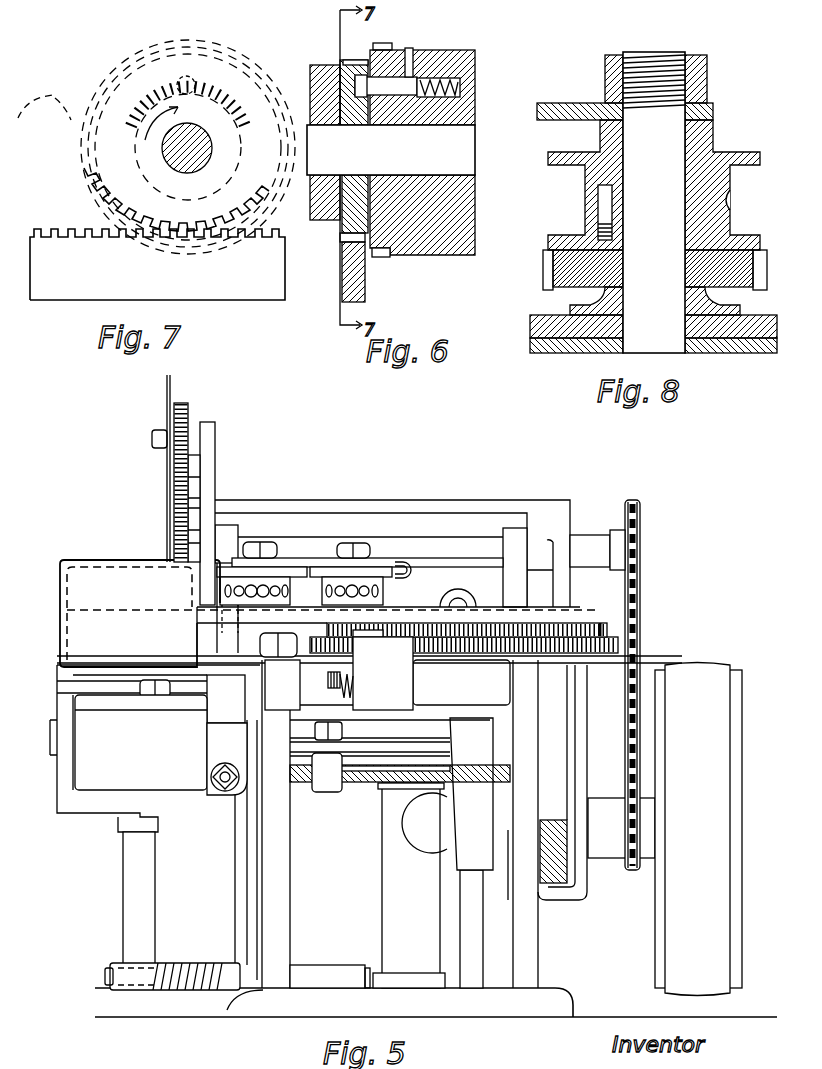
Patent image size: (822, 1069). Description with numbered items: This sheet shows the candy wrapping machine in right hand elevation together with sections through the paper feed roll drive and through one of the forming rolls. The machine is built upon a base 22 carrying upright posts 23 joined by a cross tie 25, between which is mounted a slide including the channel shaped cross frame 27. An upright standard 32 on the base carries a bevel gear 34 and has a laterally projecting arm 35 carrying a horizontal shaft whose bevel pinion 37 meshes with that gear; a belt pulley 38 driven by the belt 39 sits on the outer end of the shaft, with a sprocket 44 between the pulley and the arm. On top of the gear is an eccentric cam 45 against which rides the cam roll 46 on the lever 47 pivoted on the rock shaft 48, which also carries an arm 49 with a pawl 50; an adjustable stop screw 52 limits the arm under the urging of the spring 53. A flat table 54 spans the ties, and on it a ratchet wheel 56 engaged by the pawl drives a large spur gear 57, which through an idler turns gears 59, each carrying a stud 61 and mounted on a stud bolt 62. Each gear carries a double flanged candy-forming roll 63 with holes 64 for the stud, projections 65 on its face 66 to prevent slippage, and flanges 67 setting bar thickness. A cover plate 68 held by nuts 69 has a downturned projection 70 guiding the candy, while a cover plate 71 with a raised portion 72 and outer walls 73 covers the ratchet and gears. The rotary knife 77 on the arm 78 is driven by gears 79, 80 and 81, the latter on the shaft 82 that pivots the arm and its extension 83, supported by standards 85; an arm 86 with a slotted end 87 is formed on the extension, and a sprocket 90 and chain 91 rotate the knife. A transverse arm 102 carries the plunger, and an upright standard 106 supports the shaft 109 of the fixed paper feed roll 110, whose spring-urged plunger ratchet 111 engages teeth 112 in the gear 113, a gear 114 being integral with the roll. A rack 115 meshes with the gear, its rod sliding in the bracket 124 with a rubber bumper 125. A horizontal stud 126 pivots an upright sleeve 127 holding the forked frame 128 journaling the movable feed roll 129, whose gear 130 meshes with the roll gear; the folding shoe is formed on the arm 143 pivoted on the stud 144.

In FIG. 5, the base 22 is at (436, 1002).
In FIG. 5, the upright posts 23 is at (386, 824).
In FIG. 5, the cross tie 25 is at (485, 674).
In FIG. 5, the channel shaped cross frame 27 is at (319, 724).
In FIG. 5, the upright standard 32 is at (409, 885).
In FIG. 5, the bevel gear 34 is at (378, 782).
In FIG. 5, the laterally projecting arm 35 is at (427, 823).
In FIG. 5, the bevel pinion 37 is at (555, 895).
In FIG. 5, the belt pulley 38 is at (697, 829).
In FIG. 5, the belt 39 is at (742, 776).
In FIG. 5, the sprocket 44 is at (630, 875).
In FIG. 5, the eccentric cam 45 is at (370, 746).
In FIG. 5, the cam roll 46 is at (344, 755).
In FIG. 5, the lever 47 is at (395, 758).
In FIG. 5, the rock shaft 48 is at (471, 929).
In FIG. 5, the arm 49 is at (460, 721).
In FIG. 5, the pawl 50 is at (467, 638).
In FIG. 5, the adjustable stop screw 52 is at (345, 681).
In FIG. 5, the spring 53 is at (348, 696).
In FIG. 8, the flat table 54 is at (746, 352).
In FIG. 5, the flat table 54 is at (205, 640).
In FIG. 5, the ratchet wheel 56 is at (590, 650).
In FIG. 5, the large spur gear 57 is at (603, 623).
In FIG. 8, the gears 59 is at (740, 290).
In FIG. 8, the stud 61 is at (600, 226).
In FIG. 8, the stud bolt 62 is at (654, 202).
In FIG. 8, the double flanged candy-forming roll 63 is at (583, 178).
In FIG. 5, the double flanged candy-forming roll 63 is at (289, 595).
In FIG. 8, the holes 64 is at (600, 188).
In FIG. 8, the projections 65 is at (733, 205).
In FIG. 5, the projections 65 is at (383, 598).
In FIG. 8, the face 66 is at (732, 185).
In FIG. 5, the face 66 is at (290, 598).
In FIG. 8, the flanges 67 is at (760, 161).
In FIG. 5, the flanges 67 is at (377, 585).
In FIG. 8, the cover plate 68 is at (578, 103).
In FIG. 5, the cover plate 68 is at (331, 566).
In FIG. 8, the nuts 69 is at (708, 95).
In FIG. 5, the nuts 69 is at (278, 538).
In FIG. 5, the downturned projection 70 is at (413, 563).
In FIG. 5, the cover plate 71 is at (452, 600).
In FIG. 5, the raised portion 72 is at (140, 605).
In FIG. 5, the outer walls 73 is at (80, 605).
In FIG. 5, the rotary knife 77 is at (166, 385).
In FIG. 5, the arm 78 is at (215, 445).
In FIG. 5, the gear 79 is at (178, 403).
In FIG. 5, the gear 80 is at (174, 497).
In FIG. 5, the gear 81 is at (174, 547).
In FIG. 5, the shaft 82 is at (367, 553).
In FIG. 5, the extension 83 is at (483, 505).
In FIG. 5, the standards 85 is at (371, 589).
In FIG. 5, the arm 86 is at (562, 588).
In FIG. 5, the slotted end 87 is at (575, 800).
In FIG. 5, the sprocket 90 is at (638, 500).
In FIG. 5, the chain 91 is at (645, 625).
In FIG. 5, the transverse arm 102 is at (158, 694).
In FIG. 6, the upright standard 106 is at (328, 62).
In FIG. 7, the shaft 109 is at (172, 170).
In FIG. 6, the shaft 109 is at (391, 150).
In FIG. 6, the fixed rotatable paper feed roll 110 is at (437, 52).
In FIG. 7, the spring-urged plunger ratchet 111 is at (181, 108).
In FIG. 6, the spring-urged plunger ratchet 111 is at (409, 48).
In FIG. 7, the teeth 112 is at (244, 123).
In FIG. 6, the teeth 112 is at (401, 65).
In FIG. 7, the gear 113 is at (228, 68).
In FIG. 6, the gear 113 is at (340, 230).
In FIG. 7, the gear 114 is at (178, 46).
In FIG. 6, the gear 114 is at (383, 258).
In FIG. 7, the rack 115 is at (157, 264).
In FIG. 6, the rack 115 is at (365, 296).
In FIG. 5, the bracket 124 is at (227, 759).
In FIG. 5, the rubber bumper 125 is at (211, 766).
In FIG. 5, the horizontal stud 126 is at (310, 970).
In FIG. 5, the upright sleeve 127 is at (155, 883).
In FIG. 5, the forked frame 128 is at (104, 748).
In FIG. 5, the movable paper feed roll 129 is at (140, 742).
In FIG. 7, the gear 130 is at (81, 118).
In FIG. 5, the arm 143 is at (418, 603).
In FIG. 5, the stud 144 is at (468, 597).